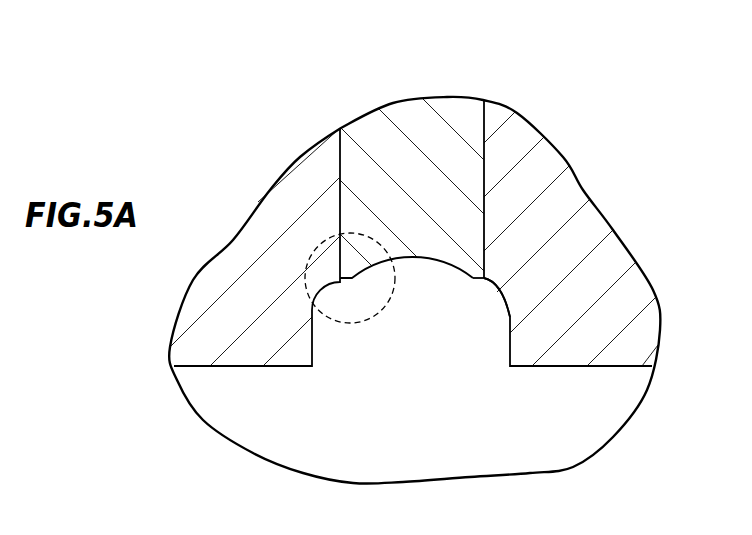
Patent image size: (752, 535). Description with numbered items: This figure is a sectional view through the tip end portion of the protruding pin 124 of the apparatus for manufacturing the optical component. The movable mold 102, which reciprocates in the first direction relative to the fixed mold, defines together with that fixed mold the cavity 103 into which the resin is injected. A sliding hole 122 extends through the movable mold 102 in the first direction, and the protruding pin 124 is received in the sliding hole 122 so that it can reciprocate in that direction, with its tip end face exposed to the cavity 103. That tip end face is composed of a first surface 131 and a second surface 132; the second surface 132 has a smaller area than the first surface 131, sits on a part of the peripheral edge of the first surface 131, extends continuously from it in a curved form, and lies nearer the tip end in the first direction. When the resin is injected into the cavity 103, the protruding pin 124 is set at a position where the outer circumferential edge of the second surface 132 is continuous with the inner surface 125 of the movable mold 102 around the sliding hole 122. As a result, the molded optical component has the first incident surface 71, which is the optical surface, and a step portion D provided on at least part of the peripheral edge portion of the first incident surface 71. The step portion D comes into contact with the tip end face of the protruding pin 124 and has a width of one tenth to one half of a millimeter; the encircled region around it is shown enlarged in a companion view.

The movable mold 102 is at (568, 198).
The cavity 103 is at (580, 417).
The sliding hole 122 is at (484, 133).
The protruding pin 124 is at (410, 127).
The inner surface 125 is at (497, 290).
The first surface 131 is at (422, 260).
The second surface 132 is at (477, 280).
The first incident surface 71 is at (407, 257).
The step portion D is at (330, 240).